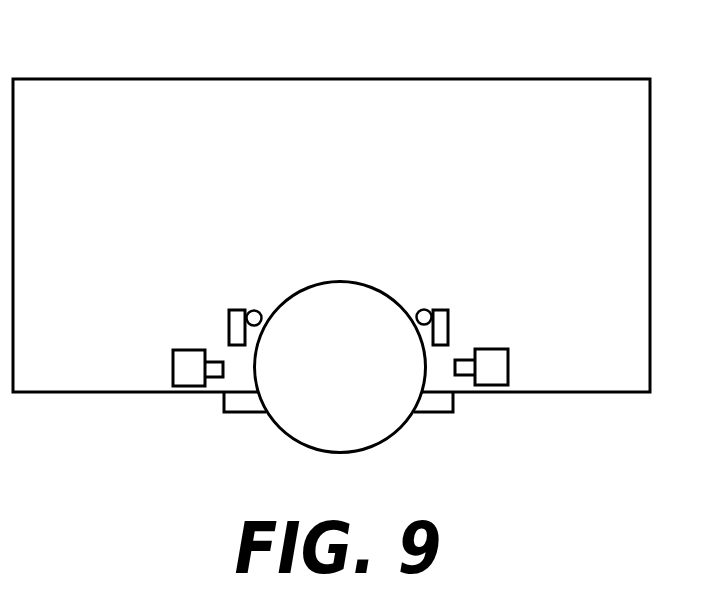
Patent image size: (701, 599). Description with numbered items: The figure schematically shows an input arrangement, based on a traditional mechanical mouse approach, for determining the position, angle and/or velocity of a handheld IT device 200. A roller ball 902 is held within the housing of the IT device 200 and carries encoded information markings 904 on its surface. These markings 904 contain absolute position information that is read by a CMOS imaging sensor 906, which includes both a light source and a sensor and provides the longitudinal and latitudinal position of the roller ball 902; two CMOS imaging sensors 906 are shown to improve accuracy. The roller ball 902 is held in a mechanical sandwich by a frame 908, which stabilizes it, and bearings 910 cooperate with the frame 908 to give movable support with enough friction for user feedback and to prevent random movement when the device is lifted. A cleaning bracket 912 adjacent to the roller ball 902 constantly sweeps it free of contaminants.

The IT device 200 is at (315, 79).
The roller ball 902 is at (377, 288).
The encoded information markings 904 is at (328, 315).
The CMOS imaging sensor 906 is at (178, 350).
The frame 908 is at (231, 311).
The bearings 910 is at (252, 311).
The cleaning bracket 912 is at (242, 413).